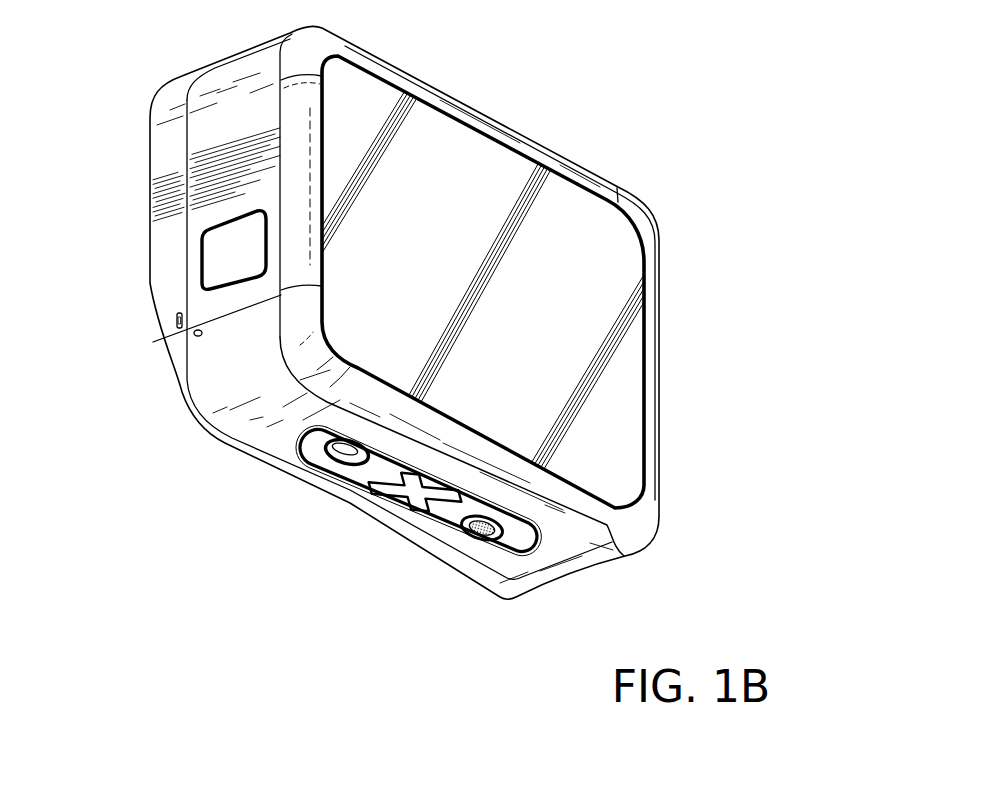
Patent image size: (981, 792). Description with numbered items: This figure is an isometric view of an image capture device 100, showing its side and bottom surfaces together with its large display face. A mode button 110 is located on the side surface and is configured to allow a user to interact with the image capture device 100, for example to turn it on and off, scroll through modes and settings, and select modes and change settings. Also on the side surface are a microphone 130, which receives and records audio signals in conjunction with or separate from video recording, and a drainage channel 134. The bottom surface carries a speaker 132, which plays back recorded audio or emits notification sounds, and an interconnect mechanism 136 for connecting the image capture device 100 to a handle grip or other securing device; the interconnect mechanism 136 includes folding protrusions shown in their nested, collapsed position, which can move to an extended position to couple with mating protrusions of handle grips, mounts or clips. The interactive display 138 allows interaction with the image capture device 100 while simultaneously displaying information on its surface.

The image capture device 100 is at (647, 108).
The mode button 110 is at (217, 256).
The microphone 130 is at (197, 334).
The speaker 132 is at (479, 539).
The drainage channel 134 is at (176, 320).
The interconnect mechanism 136 is at (343, 477).
The interactive display 138 is at (618, 406).